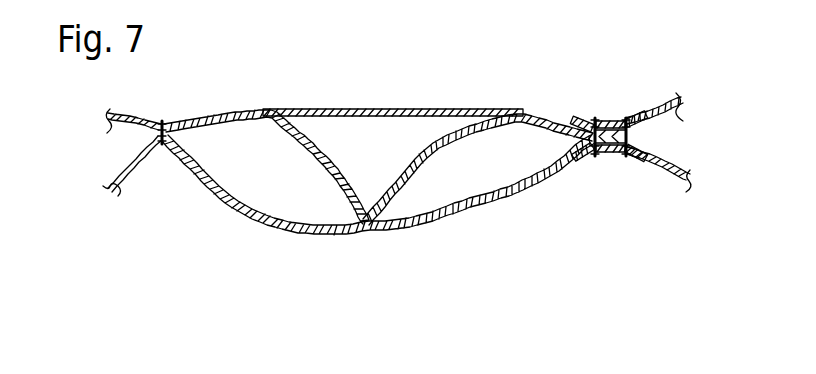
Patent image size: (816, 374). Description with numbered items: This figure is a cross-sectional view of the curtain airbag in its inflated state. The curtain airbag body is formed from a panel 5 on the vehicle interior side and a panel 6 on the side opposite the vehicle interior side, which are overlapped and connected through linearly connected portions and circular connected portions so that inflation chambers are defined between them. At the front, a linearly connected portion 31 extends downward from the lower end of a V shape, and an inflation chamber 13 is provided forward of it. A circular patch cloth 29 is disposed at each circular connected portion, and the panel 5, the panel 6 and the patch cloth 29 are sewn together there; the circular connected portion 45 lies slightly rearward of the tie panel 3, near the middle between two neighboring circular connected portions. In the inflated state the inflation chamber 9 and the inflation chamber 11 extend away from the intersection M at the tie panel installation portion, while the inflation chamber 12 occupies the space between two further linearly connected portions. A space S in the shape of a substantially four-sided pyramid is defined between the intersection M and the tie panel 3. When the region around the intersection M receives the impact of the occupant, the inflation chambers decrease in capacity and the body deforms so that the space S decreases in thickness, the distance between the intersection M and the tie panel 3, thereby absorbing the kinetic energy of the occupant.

The tie panel 3 is at (400, 109).
The panel 5 is at (278, 228).
The panel 6 is at (237, 113).
The inflation chamber 9 is at (275, 183).
The inflation chamber 11 is at (483, 185).
The inflation chamber 12 is at (679, 155).
The inflation chamber 13 is at (117, 168).
The patch cloth 29 is at (584, 118).
The linearly connected portion 31 is at (162, 146).
The circular connected portion 45 is at (598, 117).
The space S is at (378, 158).
The intersection M is at (374, 237).